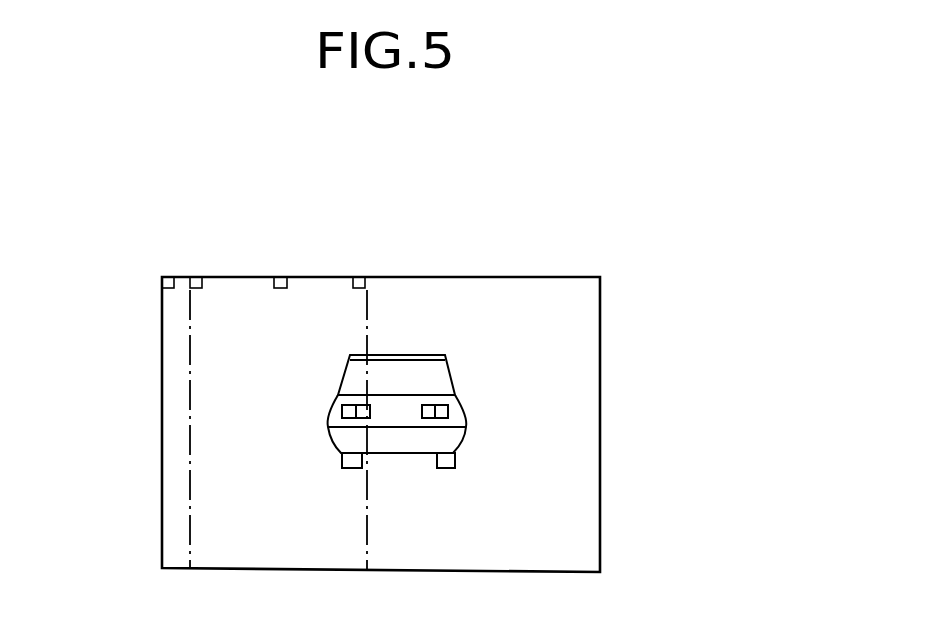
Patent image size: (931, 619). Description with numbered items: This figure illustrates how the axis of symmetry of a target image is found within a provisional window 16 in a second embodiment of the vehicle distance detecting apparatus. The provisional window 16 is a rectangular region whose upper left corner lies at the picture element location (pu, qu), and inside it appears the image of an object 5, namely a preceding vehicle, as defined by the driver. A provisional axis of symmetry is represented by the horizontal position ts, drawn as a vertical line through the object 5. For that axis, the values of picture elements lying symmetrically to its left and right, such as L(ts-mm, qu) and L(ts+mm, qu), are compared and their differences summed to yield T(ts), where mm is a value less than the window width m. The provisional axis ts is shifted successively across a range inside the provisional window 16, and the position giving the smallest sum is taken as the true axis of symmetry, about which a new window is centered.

The object 5 is at (443, 382).
The provisional window 16 is at (600, 501).